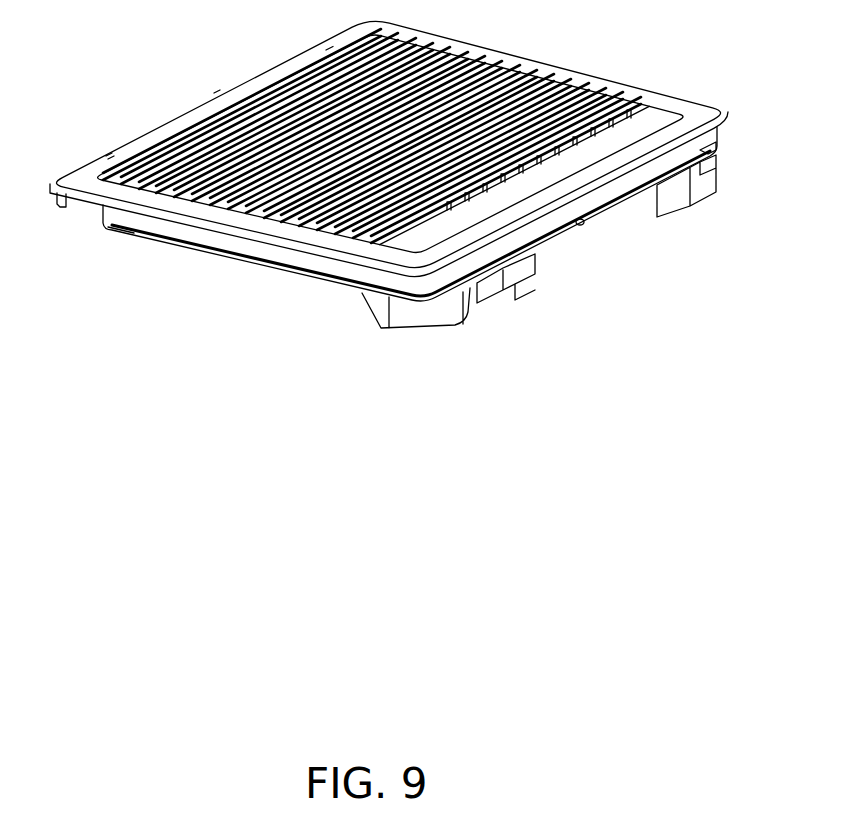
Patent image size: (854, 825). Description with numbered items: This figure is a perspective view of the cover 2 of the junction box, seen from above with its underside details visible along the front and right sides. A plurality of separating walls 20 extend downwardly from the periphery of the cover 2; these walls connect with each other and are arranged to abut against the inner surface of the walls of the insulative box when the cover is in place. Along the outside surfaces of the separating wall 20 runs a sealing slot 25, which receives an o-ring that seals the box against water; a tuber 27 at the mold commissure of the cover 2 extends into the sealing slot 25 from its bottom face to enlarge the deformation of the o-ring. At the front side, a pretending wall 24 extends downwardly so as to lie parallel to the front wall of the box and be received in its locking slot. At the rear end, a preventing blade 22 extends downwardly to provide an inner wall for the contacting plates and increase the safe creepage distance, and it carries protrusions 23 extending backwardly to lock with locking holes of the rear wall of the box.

The cover 2 is at (188, 84).
The separating walls 20 is at (213, 253).
The preventing blade 22 is at (425, 312).
The protrusions 23 is at (505, 286).
The pretending wall 24 is at (62, 205).
The sealing slot 25 is at (717, 143).
The tuber 27 is at (583, 226).